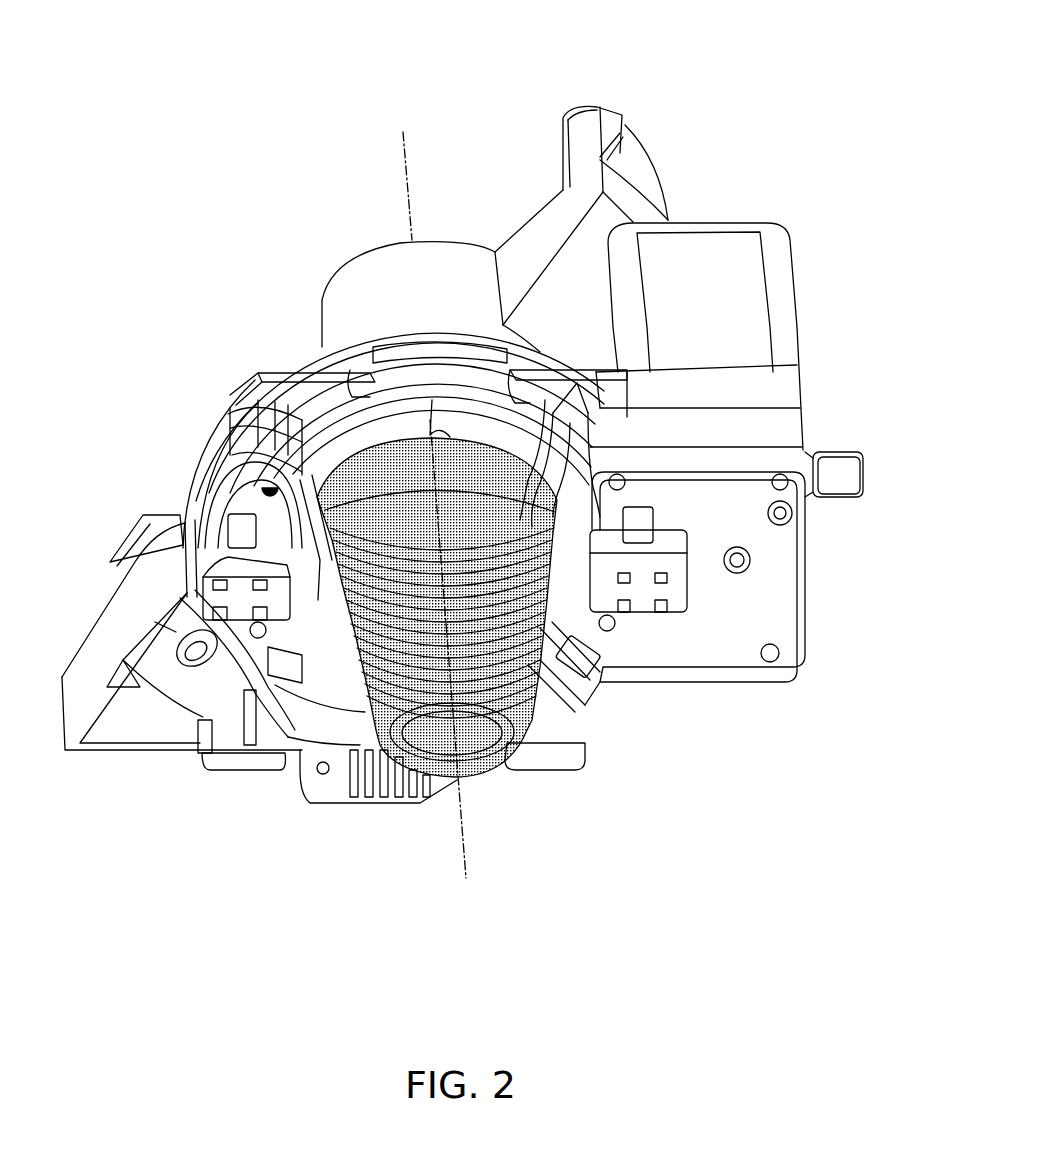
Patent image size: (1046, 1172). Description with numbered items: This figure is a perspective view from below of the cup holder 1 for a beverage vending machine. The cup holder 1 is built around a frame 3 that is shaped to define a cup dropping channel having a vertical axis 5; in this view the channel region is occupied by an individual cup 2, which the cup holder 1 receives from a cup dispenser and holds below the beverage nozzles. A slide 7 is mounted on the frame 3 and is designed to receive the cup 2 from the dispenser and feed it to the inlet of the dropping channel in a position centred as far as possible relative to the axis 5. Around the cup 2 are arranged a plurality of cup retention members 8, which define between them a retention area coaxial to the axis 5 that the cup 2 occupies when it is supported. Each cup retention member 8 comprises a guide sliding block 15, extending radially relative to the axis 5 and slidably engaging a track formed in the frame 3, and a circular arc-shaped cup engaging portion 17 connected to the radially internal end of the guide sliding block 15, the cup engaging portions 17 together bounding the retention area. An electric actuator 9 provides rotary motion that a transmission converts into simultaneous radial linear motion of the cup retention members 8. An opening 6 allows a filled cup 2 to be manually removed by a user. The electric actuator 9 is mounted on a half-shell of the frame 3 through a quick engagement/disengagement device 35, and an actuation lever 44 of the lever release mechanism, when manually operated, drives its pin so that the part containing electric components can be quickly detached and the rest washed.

The cup holder 1 is at (176, 320).
The cup 2 is at (483, 770).
The frame 3 is at (812, 573).
The vertical axis 5 is at (404, 151).
The opening 6 is at (318, 422).
The slide 7 is at (642, 147).
The cup retention member 8 is at (308, 465).
The electric actuator 9 is at (762, 314).
The guide sliding block 15 is at (187, 595).
The cup engaging portion 17 is at (210, 440).
The quick engagement/disengagement device 35 is at (860, 443).
The actuation lever 44 is at (858, 488).